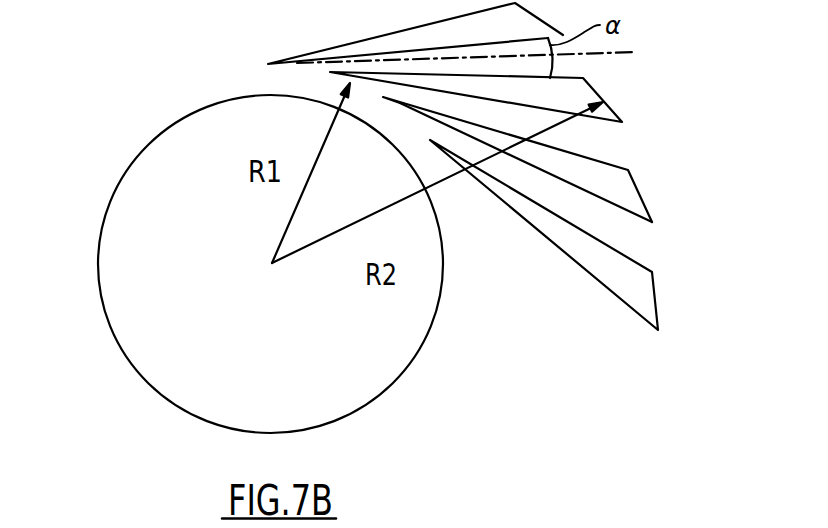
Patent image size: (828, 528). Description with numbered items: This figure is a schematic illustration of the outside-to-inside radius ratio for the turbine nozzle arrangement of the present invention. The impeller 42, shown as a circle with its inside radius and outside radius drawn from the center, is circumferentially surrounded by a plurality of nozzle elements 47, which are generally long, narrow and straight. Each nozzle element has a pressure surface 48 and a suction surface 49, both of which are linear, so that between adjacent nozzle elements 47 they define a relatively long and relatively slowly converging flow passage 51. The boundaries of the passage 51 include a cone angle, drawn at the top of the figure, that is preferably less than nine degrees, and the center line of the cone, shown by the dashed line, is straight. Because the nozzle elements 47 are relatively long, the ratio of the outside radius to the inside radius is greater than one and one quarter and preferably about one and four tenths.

The impeller 42 is at (100, 290).
The nozzle elements 47 is at (617, 190).
The pressure surface 48 is at (597, 158).
The suction surface 49 is at (597, 200).
The flow passage 51 is at (583, 142).